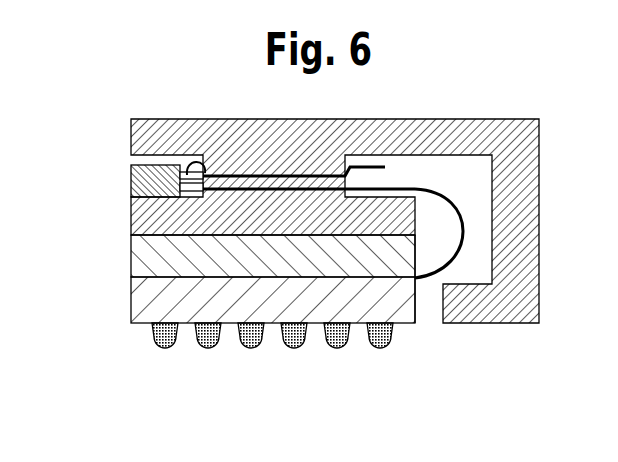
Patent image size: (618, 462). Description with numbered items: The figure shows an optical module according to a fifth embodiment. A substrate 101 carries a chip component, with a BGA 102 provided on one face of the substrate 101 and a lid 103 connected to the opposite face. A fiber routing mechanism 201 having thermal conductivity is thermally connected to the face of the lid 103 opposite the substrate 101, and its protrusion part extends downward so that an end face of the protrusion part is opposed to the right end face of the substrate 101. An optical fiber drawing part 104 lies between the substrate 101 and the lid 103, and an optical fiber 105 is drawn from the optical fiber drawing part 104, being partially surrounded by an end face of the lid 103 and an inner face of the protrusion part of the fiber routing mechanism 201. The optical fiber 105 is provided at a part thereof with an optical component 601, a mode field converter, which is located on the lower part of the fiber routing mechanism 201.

The fiber routing mechanism 201 is at (131, 128).
The optical component 601 is at (131, 175).
The lid 103 is at (131, 255).
The substrate 101 is at (131, 312).
The BGA 102 is at (164, 348).
The optical fiber drawing part 104 is at (415, 278).
The optical fiber 105 is at (465, 212).